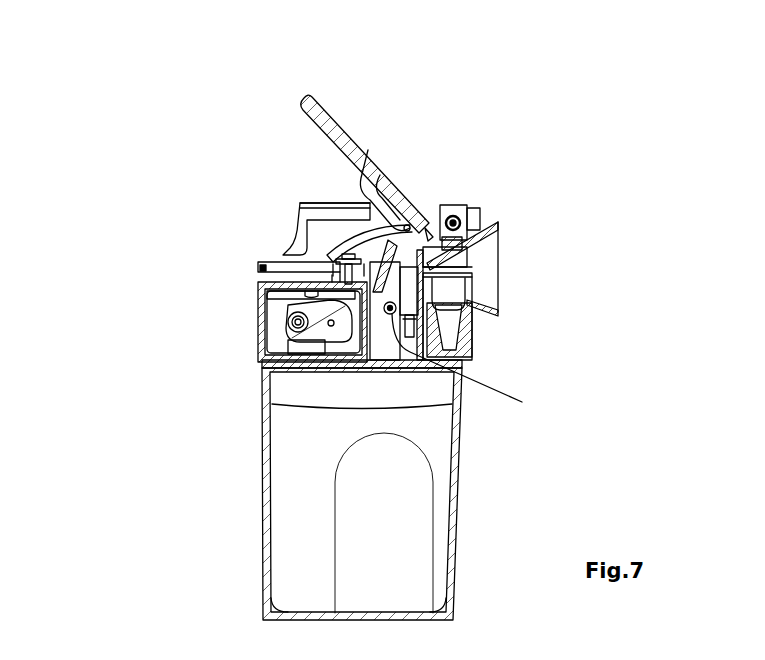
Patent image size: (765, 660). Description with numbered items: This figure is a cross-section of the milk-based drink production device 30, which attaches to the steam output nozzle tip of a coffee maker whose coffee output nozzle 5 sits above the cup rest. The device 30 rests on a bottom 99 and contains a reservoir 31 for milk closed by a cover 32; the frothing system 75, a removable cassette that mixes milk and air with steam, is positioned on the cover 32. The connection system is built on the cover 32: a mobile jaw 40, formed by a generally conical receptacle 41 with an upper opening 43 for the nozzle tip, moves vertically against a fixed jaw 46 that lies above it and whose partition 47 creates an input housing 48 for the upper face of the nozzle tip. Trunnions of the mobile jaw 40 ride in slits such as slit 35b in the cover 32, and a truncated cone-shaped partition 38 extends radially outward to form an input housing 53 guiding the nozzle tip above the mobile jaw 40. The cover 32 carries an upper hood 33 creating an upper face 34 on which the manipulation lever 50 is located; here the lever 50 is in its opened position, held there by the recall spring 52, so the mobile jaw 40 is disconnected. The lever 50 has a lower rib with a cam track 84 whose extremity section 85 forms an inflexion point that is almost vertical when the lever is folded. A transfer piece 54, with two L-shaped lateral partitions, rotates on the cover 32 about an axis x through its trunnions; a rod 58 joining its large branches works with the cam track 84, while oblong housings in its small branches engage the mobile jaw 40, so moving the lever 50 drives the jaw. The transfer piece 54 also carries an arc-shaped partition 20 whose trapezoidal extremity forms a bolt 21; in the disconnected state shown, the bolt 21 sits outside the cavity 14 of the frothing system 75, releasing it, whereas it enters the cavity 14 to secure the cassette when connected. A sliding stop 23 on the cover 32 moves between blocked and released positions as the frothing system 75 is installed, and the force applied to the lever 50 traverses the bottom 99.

The milk-based drink production device 30 is at (150, 104).
The reservoir 31 is at (440, 503).
The bottom 99 is at (323, 620).
The frothing system 75 is at (262, 352).
The cover 32 is at (260, 278).
The cavity 14 is at (318, 300).
The stop 23 is at (258, 268).
The bolt 21 is at (285, 257).
The partition 20 is at (297, 210).
The upper face 34 is at (300, 203).
The upper hood 33 is at (385, 250).
The transfer piece 54 is at (375, 240).
The manipulation lever 50 is at (305, 98).
The extremity section 85 is at (384, 182).
The cam track 84 is at (392, 200).
The recall spring 52 is at (453, 215).
The rod 58 is at (408, 225).
The coffee output nozzle 5 is at (520, 58).
The fixed jaw 46 is at (477, 213).
The partition 47 is at (445, 252).
The input housing 48 is at (437, 258).
The input housing 53 is at (430, 267).
The mobile jaw 40 is at (440, 337).
The slit 35b is at (452, 288).
The receptacle 41 is at (452, 322).
The upper opening 43 is at (455, 297).
The truncated cone-shaped partition 38 is at (472, 307).
The axis x is at (522, 402).